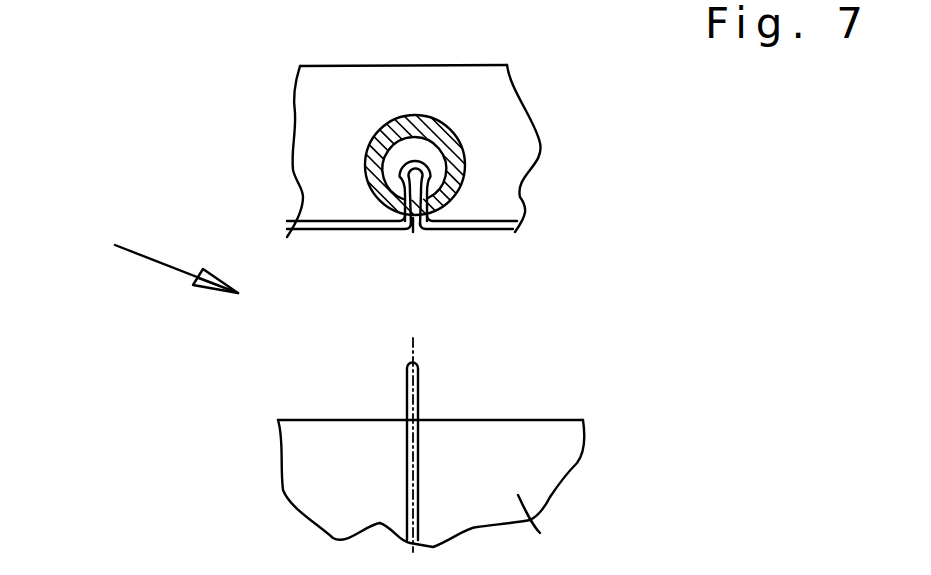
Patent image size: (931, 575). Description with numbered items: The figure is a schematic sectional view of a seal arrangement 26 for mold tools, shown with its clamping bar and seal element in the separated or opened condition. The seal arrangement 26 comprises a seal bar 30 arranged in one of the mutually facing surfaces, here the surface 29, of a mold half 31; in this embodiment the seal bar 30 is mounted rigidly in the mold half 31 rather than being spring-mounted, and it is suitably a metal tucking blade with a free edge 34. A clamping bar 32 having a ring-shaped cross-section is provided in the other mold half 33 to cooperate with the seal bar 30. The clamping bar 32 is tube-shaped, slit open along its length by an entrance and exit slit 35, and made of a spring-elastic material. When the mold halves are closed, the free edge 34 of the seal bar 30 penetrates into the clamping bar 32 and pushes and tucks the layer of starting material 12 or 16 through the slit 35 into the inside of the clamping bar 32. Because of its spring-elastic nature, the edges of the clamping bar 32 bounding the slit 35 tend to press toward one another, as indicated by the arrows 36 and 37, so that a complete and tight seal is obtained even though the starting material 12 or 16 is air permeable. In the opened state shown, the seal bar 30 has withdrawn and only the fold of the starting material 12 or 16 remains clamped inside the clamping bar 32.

The starting material 12 is at (530, 223).
The starting material 16 is at (513, 231).
The seal arrangement 26 is at (132, 254).
The mutually facing surface 29 is at (457, 433).
The seal bar 30 is at (352, 438).
The mold half 31 is at (569, 532).
The clamping bar 32 is at (502, 146).
The mold half 33 is at (345, 147).
The free edge 34 is at (464, 425).
The entrance and exit slit 35 is at (386, 269).
The arrow 36 is at (520, 167).
The arrow 37 is at (288, 179).